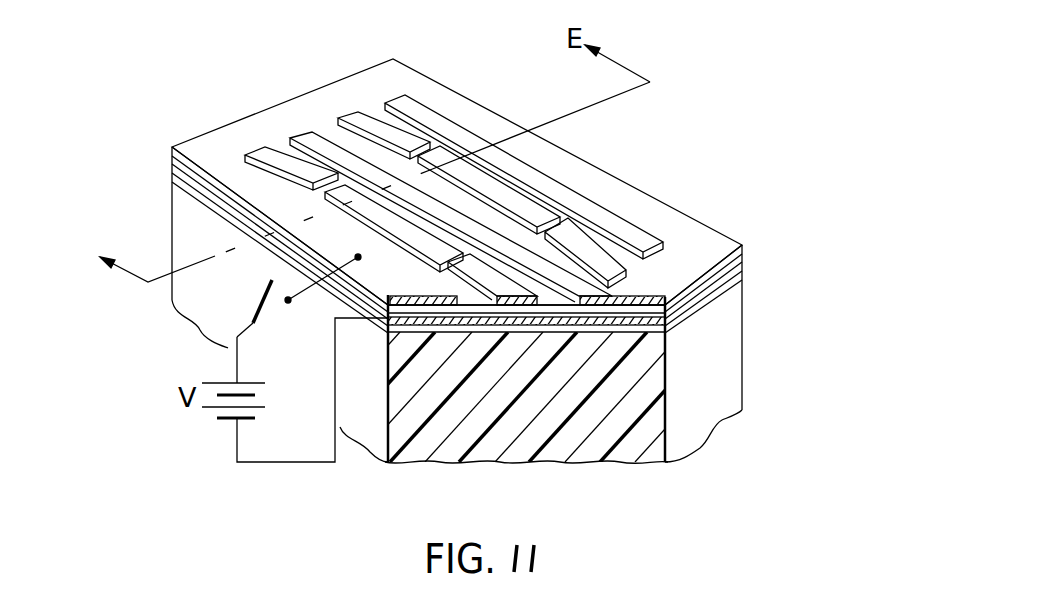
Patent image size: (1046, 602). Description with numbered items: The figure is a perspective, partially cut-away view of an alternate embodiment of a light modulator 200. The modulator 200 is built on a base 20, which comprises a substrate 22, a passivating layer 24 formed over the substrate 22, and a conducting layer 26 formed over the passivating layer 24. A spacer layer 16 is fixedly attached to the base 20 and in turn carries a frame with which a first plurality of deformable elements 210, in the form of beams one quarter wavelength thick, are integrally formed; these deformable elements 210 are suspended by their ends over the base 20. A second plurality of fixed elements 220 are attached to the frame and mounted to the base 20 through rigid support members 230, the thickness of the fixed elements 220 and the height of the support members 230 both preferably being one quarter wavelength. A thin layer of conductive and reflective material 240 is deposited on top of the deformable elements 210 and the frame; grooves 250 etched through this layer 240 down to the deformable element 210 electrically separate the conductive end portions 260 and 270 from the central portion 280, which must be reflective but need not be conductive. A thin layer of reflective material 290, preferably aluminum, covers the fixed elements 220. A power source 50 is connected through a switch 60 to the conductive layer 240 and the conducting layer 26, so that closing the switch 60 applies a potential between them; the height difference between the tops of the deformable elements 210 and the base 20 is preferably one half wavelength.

The light modulator 200 is at (738, 67).
The base 20 is at (158, 208).
The substrate 22 is at (705, 410).
The passivating layer 24 is at (745, 282).
The conducting layer 26 is at (745, 270).
The spacer layer 16 is at (745, 260).
The deformable elements 210 is at (640, 262).
The fixed elements 220 is at (634, 254).
The rigid support members 230 is at (295, 155).
The layer of conductive and reflective material 240 is at (413, 100).
The grooves 250 is at (433, 132).
The conductive end portion 260 is at (380, 110).
The conductive end portion 270 is at (603, 237).
The conductive central portion 280 is at (507, 182).
The layer of reflective material 290 is at (340, 131).
The power source 50 is at (215, 428).
The switch 60 is at (258, 303).